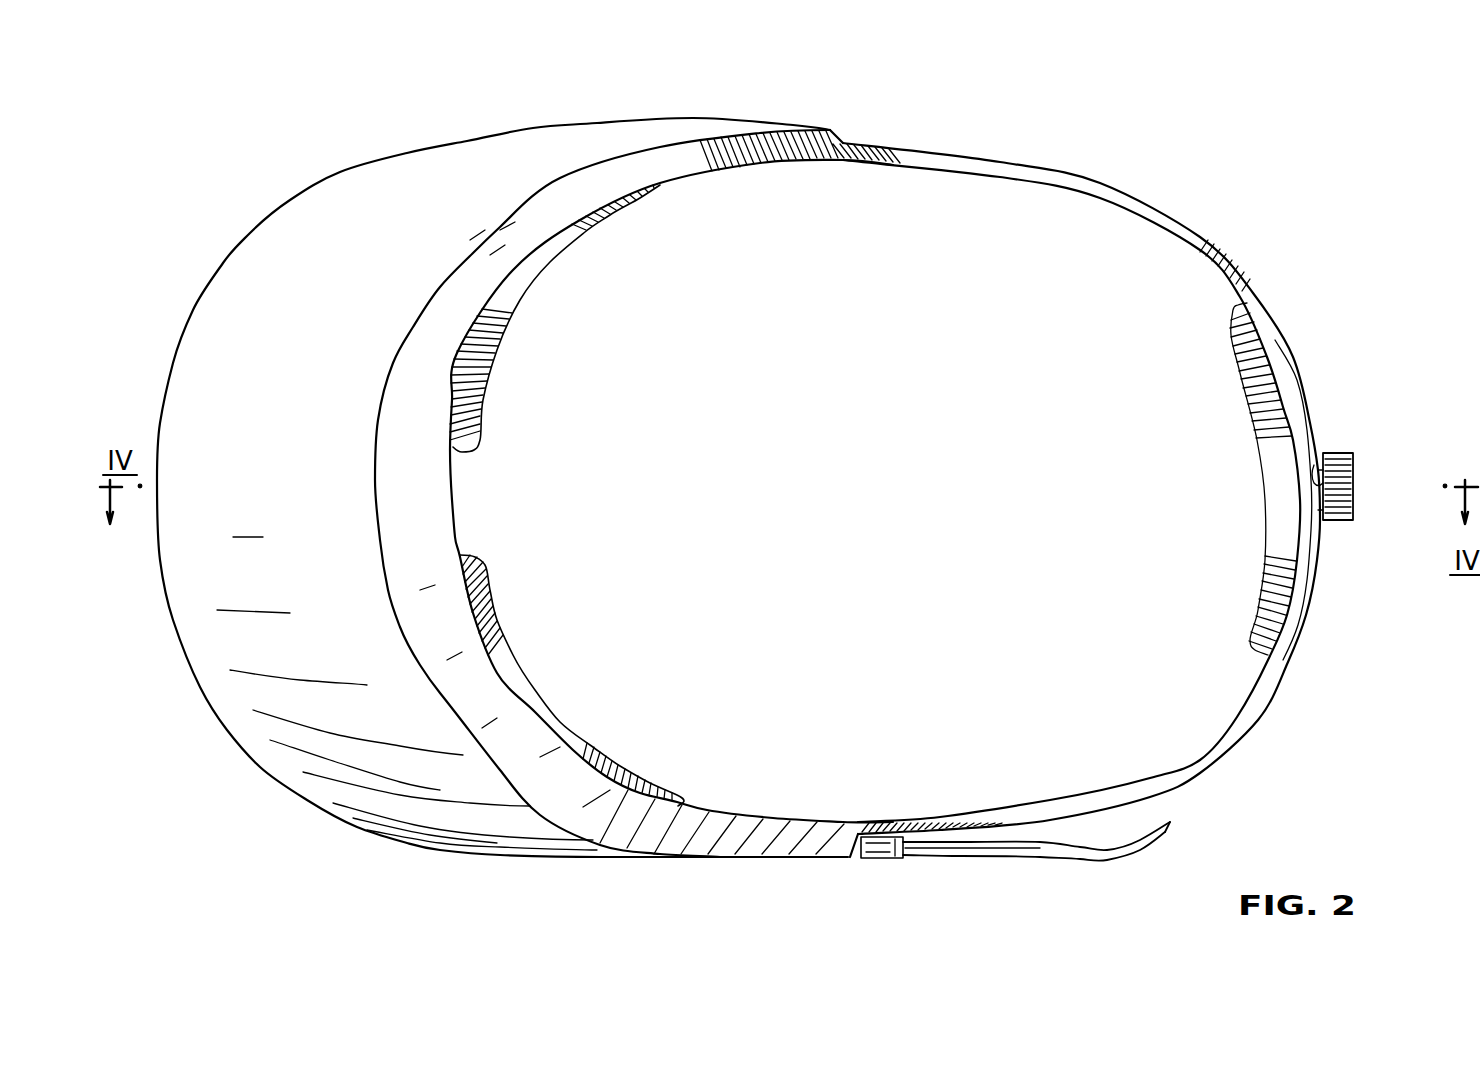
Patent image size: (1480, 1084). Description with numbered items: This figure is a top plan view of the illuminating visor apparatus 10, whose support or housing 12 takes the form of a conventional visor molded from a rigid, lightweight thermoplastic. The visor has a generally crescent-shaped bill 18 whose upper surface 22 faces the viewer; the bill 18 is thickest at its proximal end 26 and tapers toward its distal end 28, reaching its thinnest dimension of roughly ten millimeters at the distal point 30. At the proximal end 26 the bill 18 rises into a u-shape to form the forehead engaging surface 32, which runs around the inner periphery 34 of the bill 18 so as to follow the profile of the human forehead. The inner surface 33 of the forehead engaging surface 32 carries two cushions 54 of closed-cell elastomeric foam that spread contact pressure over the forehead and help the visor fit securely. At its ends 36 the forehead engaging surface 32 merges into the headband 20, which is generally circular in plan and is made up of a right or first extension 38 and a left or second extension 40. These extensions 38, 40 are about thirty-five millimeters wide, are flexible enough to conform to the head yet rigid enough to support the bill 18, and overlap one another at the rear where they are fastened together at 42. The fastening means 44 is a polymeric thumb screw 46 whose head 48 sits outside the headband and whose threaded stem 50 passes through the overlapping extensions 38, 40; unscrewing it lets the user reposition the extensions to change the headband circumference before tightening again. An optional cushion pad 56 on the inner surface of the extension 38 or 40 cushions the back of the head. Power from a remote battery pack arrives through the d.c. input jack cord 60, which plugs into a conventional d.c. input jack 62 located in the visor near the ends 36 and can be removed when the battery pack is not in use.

The apparatus 10 is at (1218, 200).
The support or housing 12 is at (392, 634).
The bill 18 is at (317, 610).
The headband 20 is at (1090, 180).
The upper surface 22 is at (218, 363).
The proximal end 26 is at (364, 351).
The distal end 28 is at (193, 610).
The distal point 30 is at (160, 573).
The forehead engaging surface 32 is at (428, 545).
The inner surface 33 is at (453, 458).
The inner periphery 34 is at (378, 545).
The ends 36 is at (806, 148).
The right or first extension 38 is at (990, 824).
The left or second extension 40 is at (980, 160).
The fastening point 42 is at (1305, 445).
The fastening means 44 is at (1357, 481).
The polymeric thumb screw 46 is at (1342, 468).
The head 48 is at (1320, 497).
The threaded stem 50 is at (1321, 470).
The cushions 54 is at (545, 250).
The cushion pad 56 is at (1266, 459).
The d.c. input jack cord 60 is at (1107, 851).
The d.c. input jack 62 is at (858, 849).